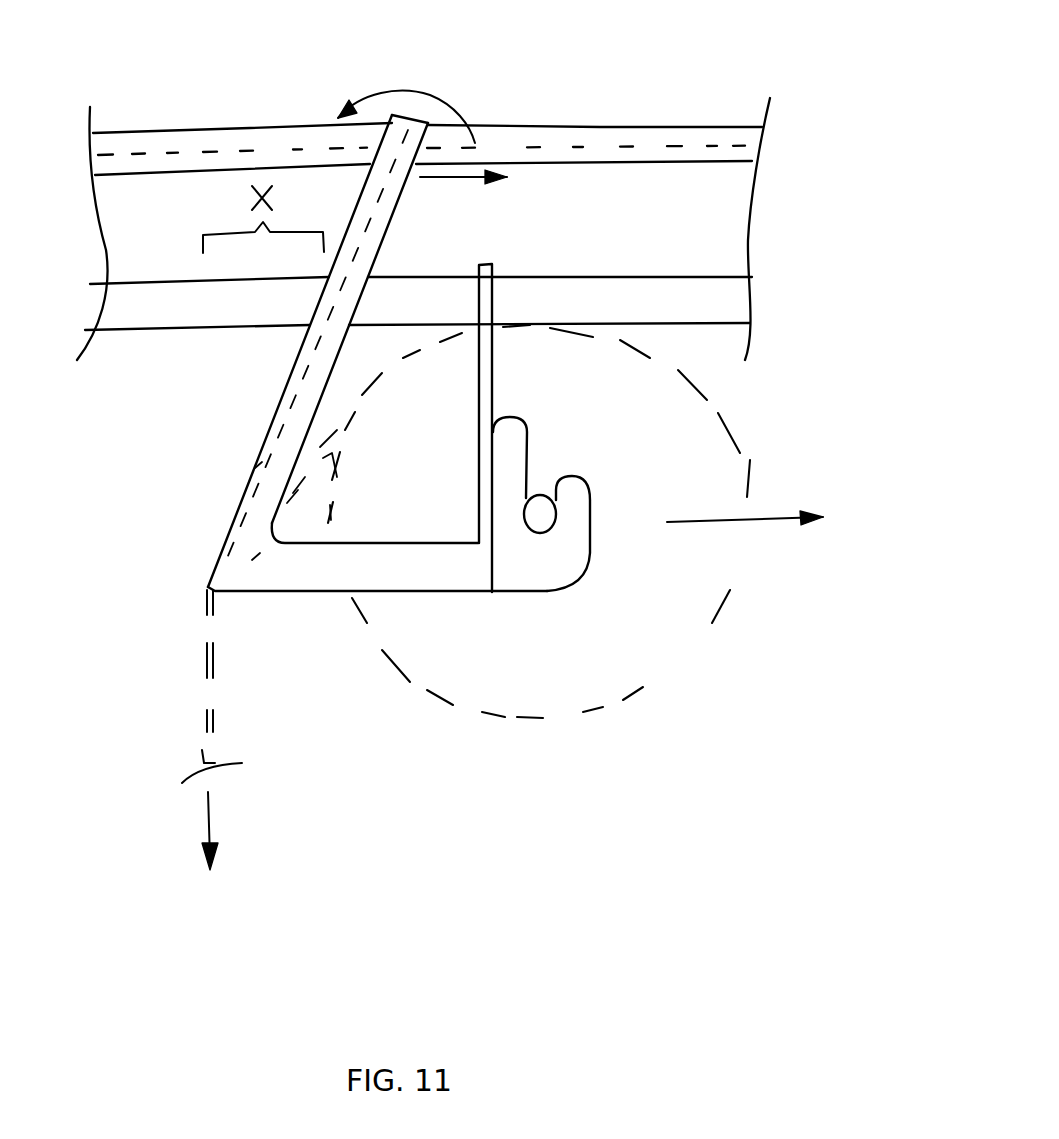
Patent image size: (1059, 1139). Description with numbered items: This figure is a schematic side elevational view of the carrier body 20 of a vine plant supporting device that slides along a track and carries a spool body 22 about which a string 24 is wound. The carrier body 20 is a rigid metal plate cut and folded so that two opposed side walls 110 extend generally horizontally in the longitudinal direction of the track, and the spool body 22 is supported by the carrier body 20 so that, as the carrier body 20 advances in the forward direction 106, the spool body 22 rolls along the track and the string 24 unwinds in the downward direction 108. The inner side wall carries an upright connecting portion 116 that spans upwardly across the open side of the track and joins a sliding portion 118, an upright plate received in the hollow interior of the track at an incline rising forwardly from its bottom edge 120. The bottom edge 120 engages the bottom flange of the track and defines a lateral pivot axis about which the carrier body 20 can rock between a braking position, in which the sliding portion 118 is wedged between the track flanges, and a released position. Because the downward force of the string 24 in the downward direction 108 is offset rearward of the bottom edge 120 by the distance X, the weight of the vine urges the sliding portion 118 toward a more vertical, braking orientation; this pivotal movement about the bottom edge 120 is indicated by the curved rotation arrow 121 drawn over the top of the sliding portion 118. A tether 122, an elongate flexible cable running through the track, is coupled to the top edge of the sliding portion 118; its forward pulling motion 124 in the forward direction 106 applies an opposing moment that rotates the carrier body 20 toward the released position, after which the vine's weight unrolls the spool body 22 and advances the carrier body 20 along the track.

The carrier body 20 is at (230, 457).
The spool body 22 is at (690, 655).
The string 24 is at (198, 722).
The forward direction 106 is at (767, 520).
The downward direction 108 is at (213, 818).
The side walls 110 is at (287, 570).
The upright connecting portion 116 is at (262, 467).
The sliding portion 118 is at (362, 202).
The bottom edge 120 is at (305, 343).
The rotational direction 121 is at (423, 88).
The tether 122 is at (673, 140).
The forward pulling motion 124 is at (468, 178).